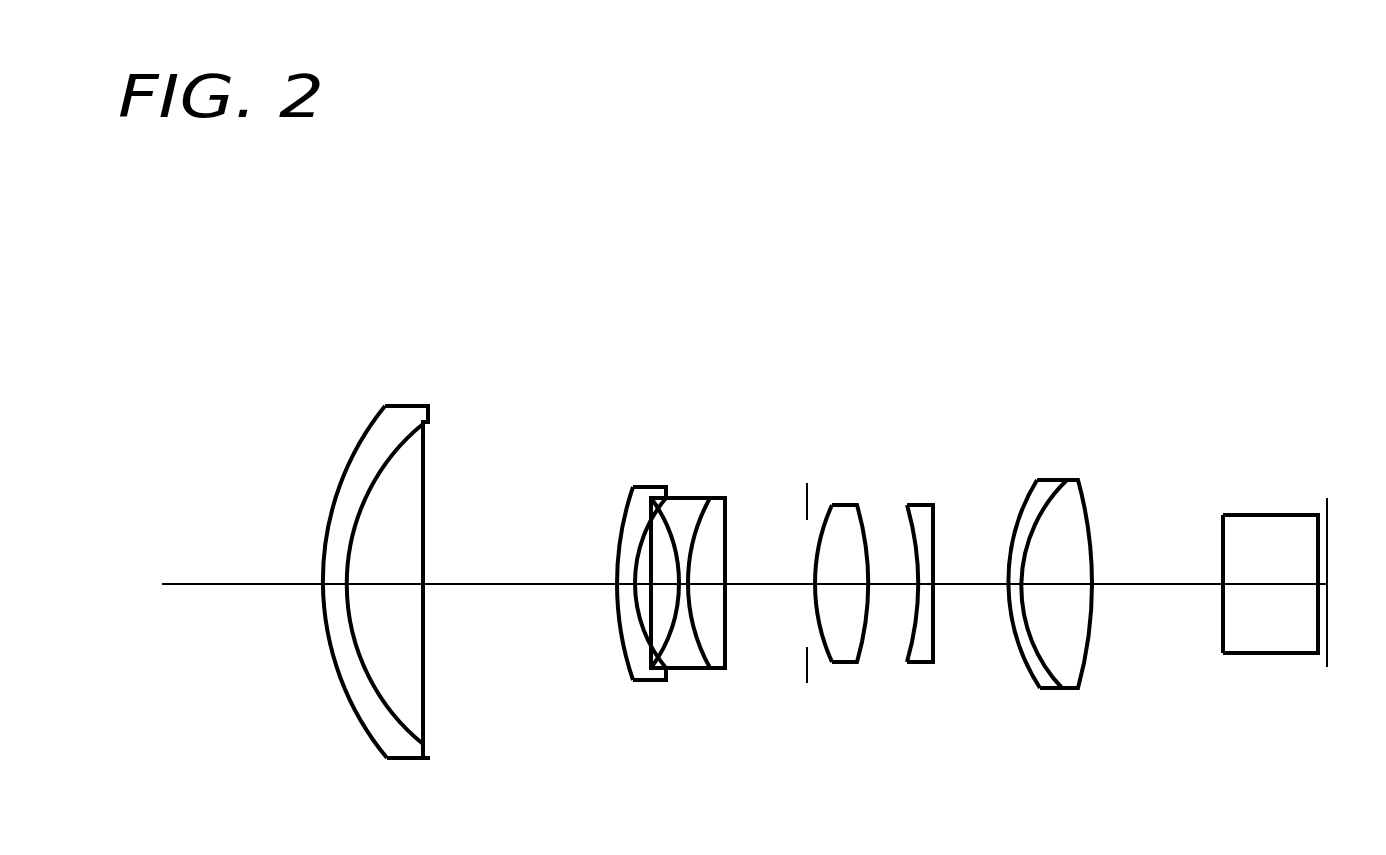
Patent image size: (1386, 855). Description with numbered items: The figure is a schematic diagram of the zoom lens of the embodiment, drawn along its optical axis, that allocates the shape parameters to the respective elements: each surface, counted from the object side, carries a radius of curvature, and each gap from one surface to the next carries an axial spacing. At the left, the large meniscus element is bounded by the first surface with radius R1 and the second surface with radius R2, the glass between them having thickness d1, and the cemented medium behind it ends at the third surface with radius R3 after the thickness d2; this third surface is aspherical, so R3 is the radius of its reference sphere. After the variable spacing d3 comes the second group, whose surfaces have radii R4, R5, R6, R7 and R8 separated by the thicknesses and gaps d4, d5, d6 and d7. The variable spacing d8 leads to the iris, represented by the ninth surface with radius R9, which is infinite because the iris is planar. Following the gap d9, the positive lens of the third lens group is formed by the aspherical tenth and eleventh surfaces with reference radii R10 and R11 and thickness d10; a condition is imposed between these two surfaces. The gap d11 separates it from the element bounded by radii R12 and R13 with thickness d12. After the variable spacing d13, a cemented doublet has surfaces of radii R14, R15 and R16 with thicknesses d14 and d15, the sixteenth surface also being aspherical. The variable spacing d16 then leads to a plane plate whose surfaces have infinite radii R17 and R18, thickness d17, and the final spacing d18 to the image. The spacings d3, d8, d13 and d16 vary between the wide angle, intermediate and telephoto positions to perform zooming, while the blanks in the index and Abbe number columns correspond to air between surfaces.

The radius of curvature of the first surface R1 is at (345, 467).
The radius of curvature of the second surface R2 is at (402, 442).
The radius of curvature of the third surface R3 is at (426, 450).
The radius of curvature of the fourth surface R4 is at (622, 518).
The radius of curvature of the fifth surface R5 is at (630, 520).
The radius of curvature of the sixth surface R6 is at (673, 497).
The radius of curvature of the seventh surface R7 is at (693, 518).
The radius of curvature of the eighth surface R8 is at (728, 518).
The radius of curvature of the ninth surface (iris) R9 is at (806, 505).
The radius of curvature of the tenth surface R10 is at (828, 505).
The radius of curvature of the eleventh surface R11 is at (857, 505).
The radius of curvature of the twelfth surface R12 is at (905, 505).
The radius of curvature of the thirteenth surface R13 is at (934, 513).
The radius of curvature of the fourteenth surface R14 is at (1030, 492).
The radius of curvature of the fifteenth surface R15 is at (1060, 480).
The radius of curvature of the sixteenth surface R16 is at (1088, 513).
The radius of curvature of the seventeenth surface R17 is at (1222, 533).
The radius of curvature of the eighteenth surface R18 is at (1315, 530).
The space between the first and second surfaces d1 is at (338, 587).
The space between the second and third surfaces d2 is at (405, 587).
The space between the third and fourth surfaces d3 is at (503, 587).
The space between the fourth and fifth surfaces d4 is at (623, 587).
The space between the fifth and sixth surfaces d5 is at (652, 587).
The space between the sixth and seventh surfaces d6 is at (685, 587).
The space between the seventh and eighth surfaces d7 is at (704, 587).
The space between the eighth and ninth surfaces d8 is at (777, 587).
The space between the ninth and tenth surfaces d9 is at (810, 590).
The space between the tenth and eleventh surfaces d10 is at (843, 587).
The space between the eleventh and twelfth surfaces d11 is at (888, 590).
The space between the twelfth and thirteenth surfaces d12 is at (922, 587).
The space between the thirteenth and fourteenth surfaces d13 is at (988, 590).
The space between the fourteenth and fifteenth surfaces d14 is at (1017, 587).
The space between the fifteenth and sixteenth surfaces d15 is at (1062, 587).
The space between the sixteenth and seventeenth surfaces d16 is at (1163, 590).
The space between the seventeenth and eighteenth surfaces d17 is at (1257, 587).
The space after the eighteenth surface d18 is at (1322, 587).